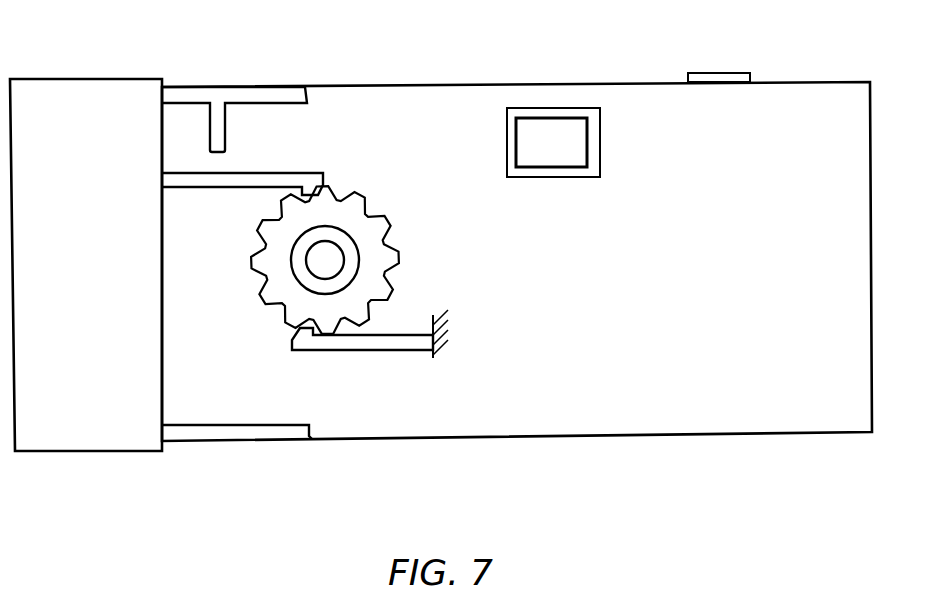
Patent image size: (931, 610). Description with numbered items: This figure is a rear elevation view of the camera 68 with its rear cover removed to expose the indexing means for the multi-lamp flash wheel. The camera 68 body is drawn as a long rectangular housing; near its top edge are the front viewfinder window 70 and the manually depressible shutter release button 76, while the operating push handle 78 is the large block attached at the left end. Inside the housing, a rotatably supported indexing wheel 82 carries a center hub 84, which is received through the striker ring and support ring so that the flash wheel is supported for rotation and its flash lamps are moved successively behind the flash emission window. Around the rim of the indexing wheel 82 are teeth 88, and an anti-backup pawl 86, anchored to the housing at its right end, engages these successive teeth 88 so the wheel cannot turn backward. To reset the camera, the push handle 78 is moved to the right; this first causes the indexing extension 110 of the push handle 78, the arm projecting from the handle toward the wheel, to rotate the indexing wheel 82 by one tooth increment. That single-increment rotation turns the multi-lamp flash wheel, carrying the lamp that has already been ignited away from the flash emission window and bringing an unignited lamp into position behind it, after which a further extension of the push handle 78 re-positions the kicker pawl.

The camera 68 is at (709, 440).
The front viewfinder window 70 is at (540, 128).
The shutter release button 76 is at (702, 72).
The operating push handle 78 is at (42, 420).
The indexing wheel 82 is at (370, 249).
The center hub 84 is at (348, 273).
The anti-backup pawl 86 is at (370, 345).
The teeth 88 is at (362, 201).
The indexing extension 110 is at (200, 183).